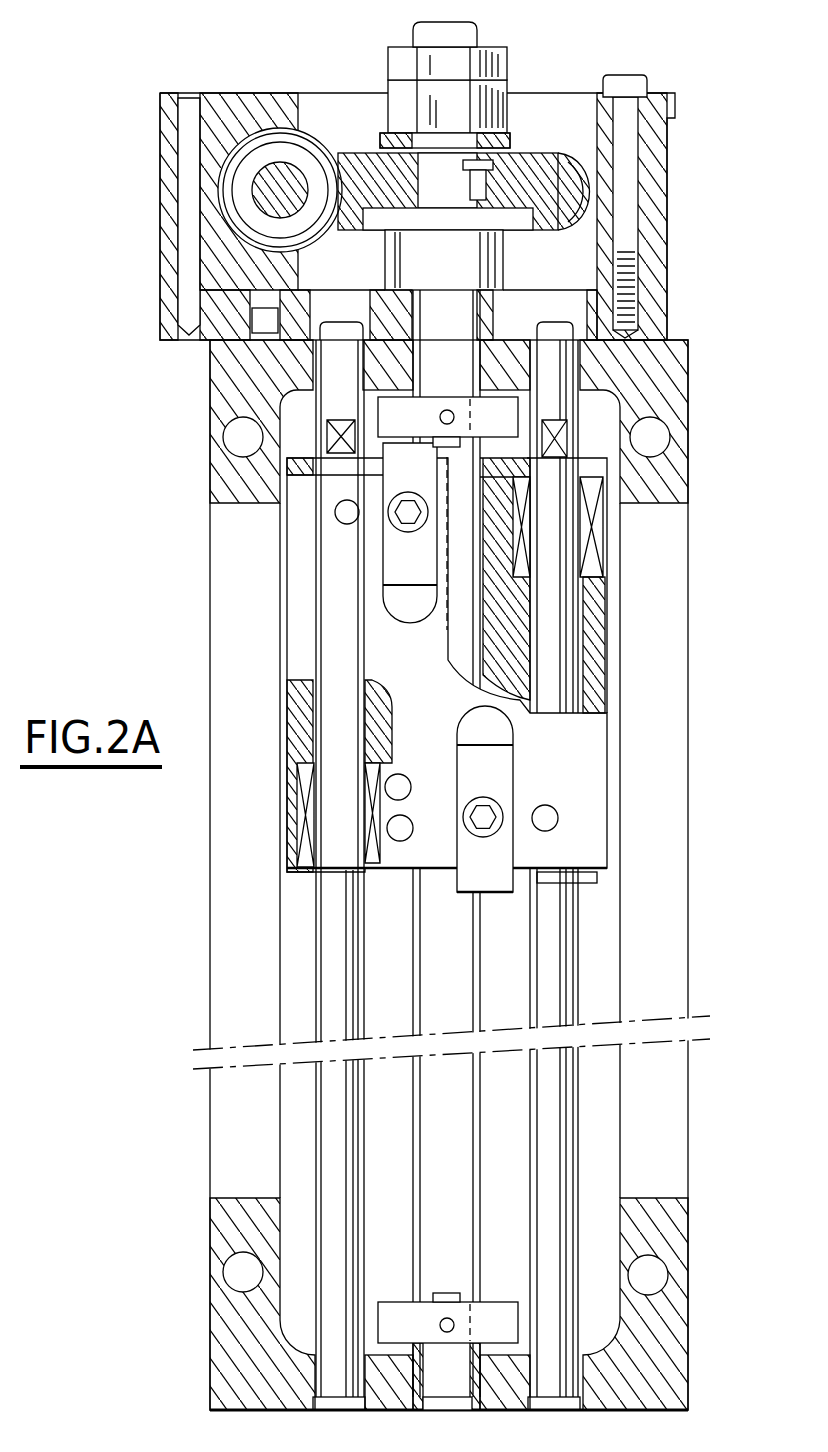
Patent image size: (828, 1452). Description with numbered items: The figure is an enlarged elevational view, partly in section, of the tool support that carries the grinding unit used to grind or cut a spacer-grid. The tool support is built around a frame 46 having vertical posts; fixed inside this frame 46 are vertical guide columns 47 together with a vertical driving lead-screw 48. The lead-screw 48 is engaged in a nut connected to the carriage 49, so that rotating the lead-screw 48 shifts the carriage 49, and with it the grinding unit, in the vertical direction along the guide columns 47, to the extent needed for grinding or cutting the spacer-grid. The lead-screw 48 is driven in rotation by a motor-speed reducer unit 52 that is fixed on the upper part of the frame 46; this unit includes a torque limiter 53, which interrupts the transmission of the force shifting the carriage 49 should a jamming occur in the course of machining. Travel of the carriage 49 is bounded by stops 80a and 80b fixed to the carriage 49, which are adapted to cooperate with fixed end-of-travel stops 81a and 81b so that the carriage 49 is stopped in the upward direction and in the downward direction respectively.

The frame 46 is at (658, 1124).
The vertical guide columns 47 is at (557, 1100).
The driving lead-screw 48 is at (458, 1137).
The carriage 49 is at (592, 780).
The motor-speed reducer unit 52 is at (266, 66).
The torque limiter 53 is at (520, 133).
The stop 80a is at (397, 577).
The stop 80b is at (493, 880).
The fixed end-of-travel stop 81a is at (407, 420).
The fixed end-of-travel stop 81b is at (495, 1320).